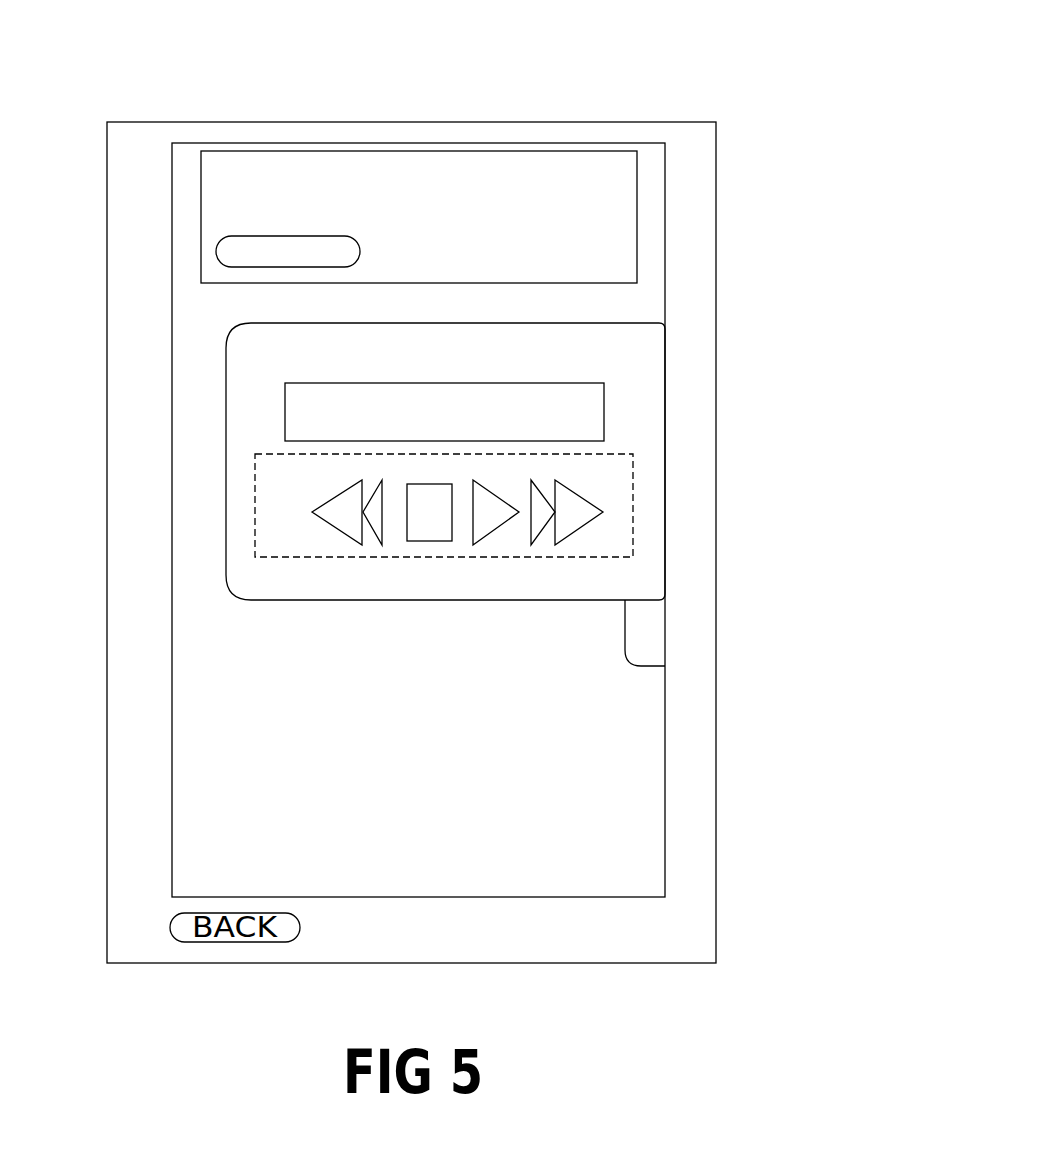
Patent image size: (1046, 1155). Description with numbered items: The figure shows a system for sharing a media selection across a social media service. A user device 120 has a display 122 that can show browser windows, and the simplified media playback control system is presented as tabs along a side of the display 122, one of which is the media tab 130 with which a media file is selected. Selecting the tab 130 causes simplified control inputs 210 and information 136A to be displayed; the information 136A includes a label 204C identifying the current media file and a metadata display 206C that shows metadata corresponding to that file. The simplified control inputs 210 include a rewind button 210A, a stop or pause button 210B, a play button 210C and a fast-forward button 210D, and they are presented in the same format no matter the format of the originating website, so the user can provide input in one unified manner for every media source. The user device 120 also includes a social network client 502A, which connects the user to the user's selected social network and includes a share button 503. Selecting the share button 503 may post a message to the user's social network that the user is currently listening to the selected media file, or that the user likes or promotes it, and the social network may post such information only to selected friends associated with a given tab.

The user device 120 is at (478, 122).
The display 122 is at (247, 143).
The tab 130 is at (662, 652).
The information 136A is at (665, 437).
The label 204C is at (407, 340).
The metadata display 206C is at (342, 383).
The simplified control inputs 210 is at (517, 580).
The rewind button 210A is at (335, 512).
The stop or pause button 210B is at (445, 528).
The play button 210C is at (490, 513).
The fast-forward button 210D is at (565, 520).
The social network client 502A is at (598, 192).
The share button 503 is at (240, 240).